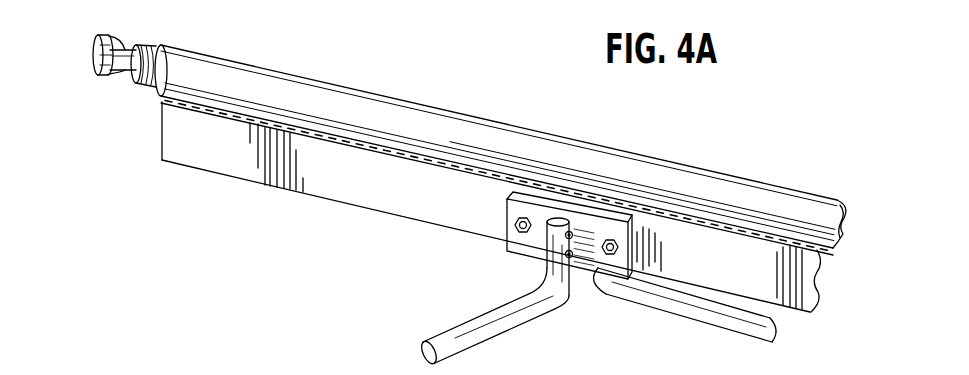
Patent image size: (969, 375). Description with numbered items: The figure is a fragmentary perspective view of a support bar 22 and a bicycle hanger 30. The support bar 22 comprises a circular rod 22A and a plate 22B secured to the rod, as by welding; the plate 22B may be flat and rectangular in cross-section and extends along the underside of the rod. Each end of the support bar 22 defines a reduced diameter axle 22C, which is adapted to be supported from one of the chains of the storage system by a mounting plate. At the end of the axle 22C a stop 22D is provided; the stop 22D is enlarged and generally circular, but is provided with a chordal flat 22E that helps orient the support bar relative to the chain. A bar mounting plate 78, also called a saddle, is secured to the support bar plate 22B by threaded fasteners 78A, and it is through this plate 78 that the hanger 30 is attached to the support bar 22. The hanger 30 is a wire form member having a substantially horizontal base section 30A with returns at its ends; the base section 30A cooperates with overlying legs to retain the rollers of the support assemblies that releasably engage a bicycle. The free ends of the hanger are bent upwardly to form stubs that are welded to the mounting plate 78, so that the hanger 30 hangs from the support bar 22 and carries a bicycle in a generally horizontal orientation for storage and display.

The support bar 22 is at (786, 180).
The circular rod 22A is at (383, 108).
The plate 22B is at (362, 197).
The reduced diameter axle 22C is at (128, 78).
The stop 22D is at (94, 39).
The chordal flat 22E is at (115, 75).
The bar mounting plate 78 is at (597, 224).
The threaded fastener 78A is at (618, 247).
The bicycle hanger 30 is at (609, 313).
The horizontal base section 30A is at (488, 328).